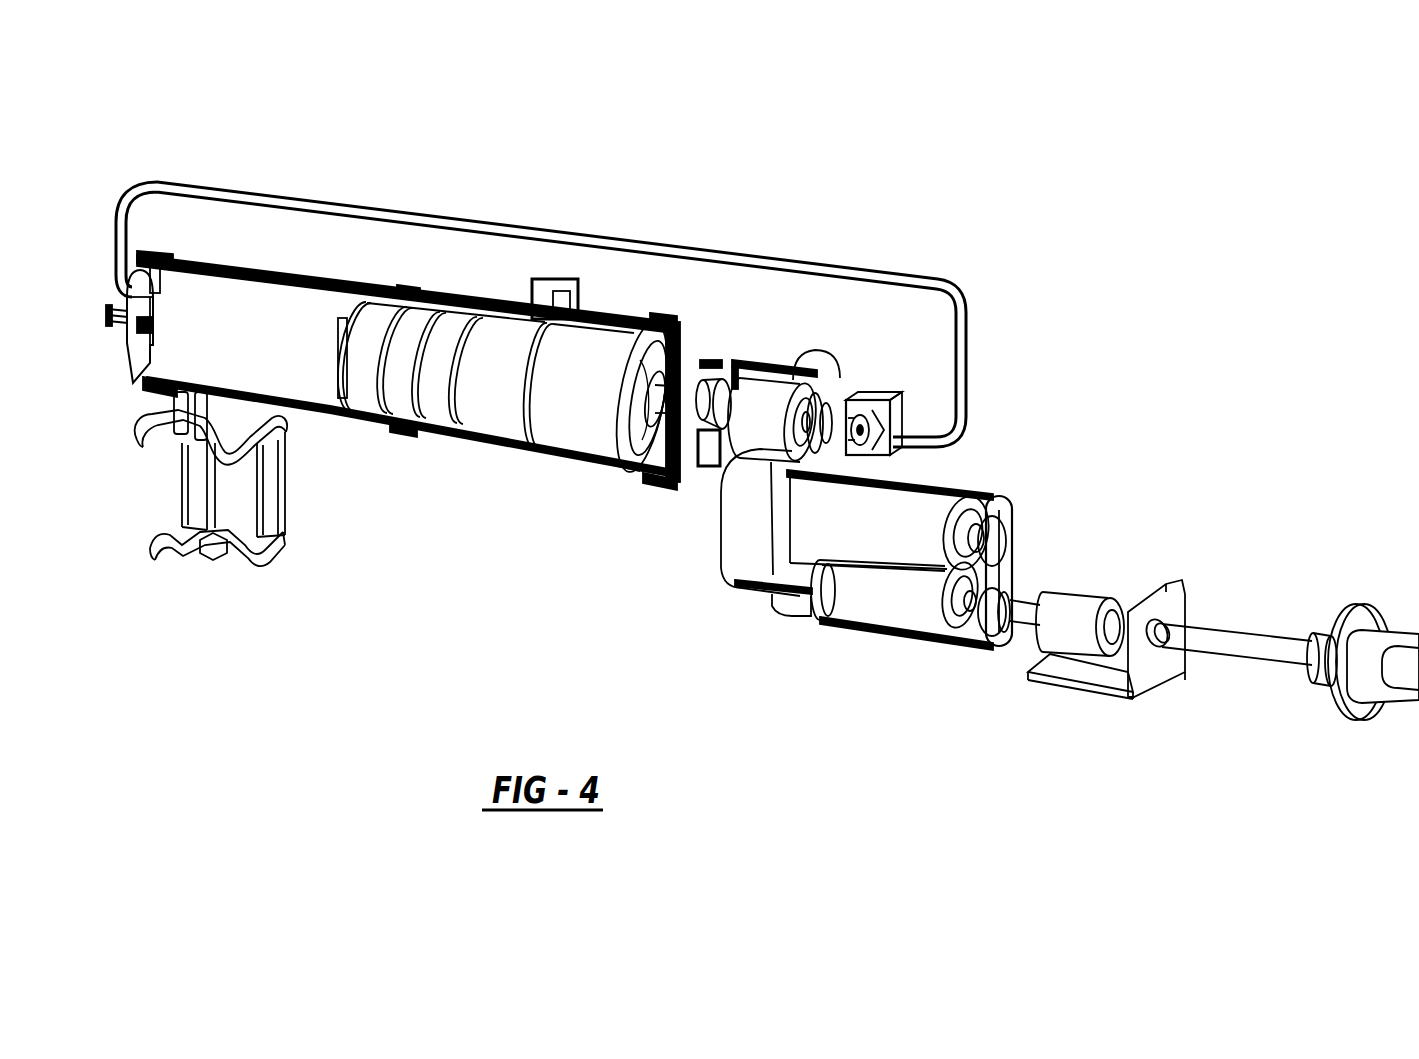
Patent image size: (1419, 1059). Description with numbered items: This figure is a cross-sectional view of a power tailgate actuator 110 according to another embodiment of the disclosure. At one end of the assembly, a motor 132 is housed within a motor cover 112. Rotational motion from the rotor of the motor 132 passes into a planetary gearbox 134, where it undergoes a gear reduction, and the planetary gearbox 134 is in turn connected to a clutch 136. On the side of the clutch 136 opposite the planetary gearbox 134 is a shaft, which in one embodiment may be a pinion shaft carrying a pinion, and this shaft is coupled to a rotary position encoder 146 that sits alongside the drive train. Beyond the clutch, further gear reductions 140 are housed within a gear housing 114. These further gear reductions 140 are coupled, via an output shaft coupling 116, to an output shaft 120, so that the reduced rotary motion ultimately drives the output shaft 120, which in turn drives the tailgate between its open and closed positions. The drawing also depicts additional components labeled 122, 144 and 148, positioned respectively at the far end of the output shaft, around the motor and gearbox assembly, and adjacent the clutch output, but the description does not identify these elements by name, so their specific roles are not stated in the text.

The power tailgate actuator 110 is at (762, 446).
The motor cover 112 is at (544, 290).
The gear housing 114 is at (866, 481).
The output shaft coupling 116 is at (1062, 686).
The output shaft 120 is at (1222, 657).
The knob 122 is at (1350, 600).
The motor 132 is at (258, 315).
The planetary gearbox 134 is at (495, 358).
The clutch 136 is at (560, 417).
The further gear reductions 140 is at (907, 540).
The conduit 144 is at (820, 266).
The rotary position encoder 146 is at (880, 396).
The coupling 148 is at (770, 443).